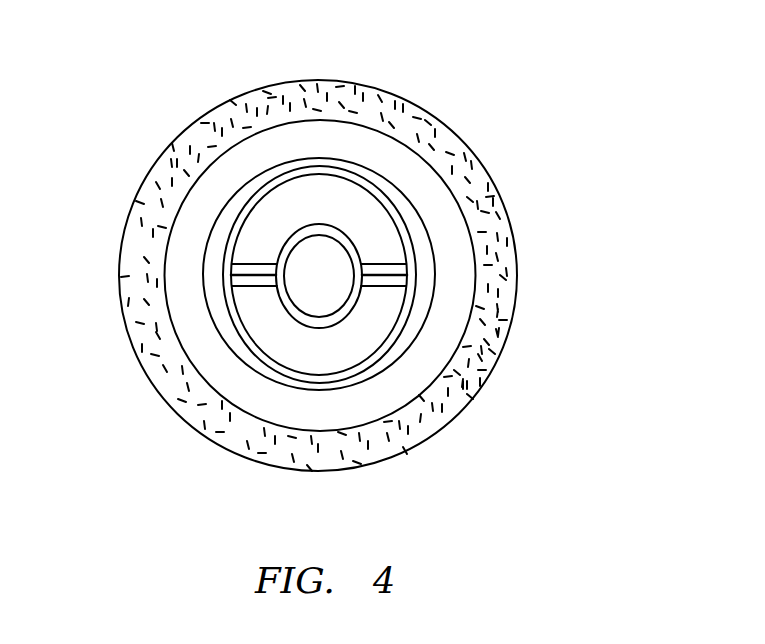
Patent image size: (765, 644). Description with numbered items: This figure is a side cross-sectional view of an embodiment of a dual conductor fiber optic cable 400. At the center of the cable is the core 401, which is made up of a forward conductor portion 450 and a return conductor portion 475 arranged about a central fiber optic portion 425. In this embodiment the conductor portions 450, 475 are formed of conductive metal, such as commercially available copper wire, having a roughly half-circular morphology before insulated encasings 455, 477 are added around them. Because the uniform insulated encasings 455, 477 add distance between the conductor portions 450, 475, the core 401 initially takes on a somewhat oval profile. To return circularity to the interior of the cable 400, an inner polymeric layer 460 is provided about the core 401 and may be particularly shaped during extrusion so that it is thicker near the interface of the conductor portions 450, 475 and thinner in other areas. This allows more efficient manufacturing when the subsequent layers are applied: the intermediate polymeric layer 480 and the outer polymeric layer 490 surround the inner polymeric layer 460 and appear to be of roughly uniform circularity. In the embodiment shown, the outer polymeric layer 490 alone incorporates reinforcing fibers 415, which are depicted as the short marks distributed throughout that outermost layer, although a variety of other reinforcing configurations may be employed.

The dual conductor fiber optic cable 400 is at (306, 266).
The reinforcing fibers 415 is at (502, 272).
The outer polymeric layer 490 is at (110, 63).
The intermediate polymeric layer 480 is at (192, 355).
The core 401 is at (242, 365).
The inner polymeric layer 460 is at (423, 270).
The insulated encasing 455 is at (245, 207).
The insulated encasing 477 is at (397, 330).
The forward conductor portion 450 is at (315, 192).
The return conductor portion 475 is at (362, 343).
The central fiber optic portion 425 is at (318, 300).